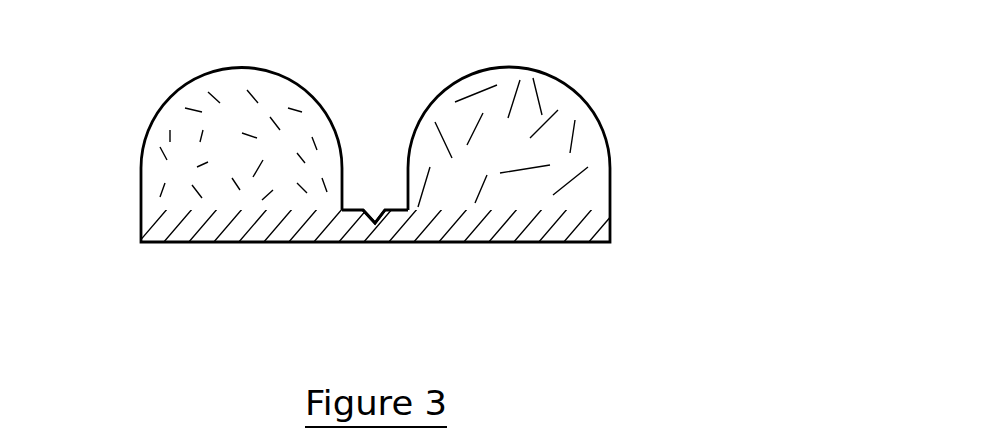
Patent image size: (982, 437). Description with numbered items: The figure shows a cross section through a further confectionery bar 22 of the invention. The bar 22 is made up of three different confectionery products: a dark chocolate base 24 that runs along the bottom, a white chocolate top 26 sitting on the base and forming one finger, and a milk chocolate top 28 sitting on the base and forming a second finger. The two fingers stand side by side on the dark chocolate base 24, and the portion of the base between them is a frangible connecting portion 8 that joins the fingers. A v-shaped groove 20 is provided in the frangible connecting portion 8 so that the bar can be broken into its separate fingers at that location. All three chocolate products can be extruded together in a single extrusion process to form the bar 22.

The frangible connecting portion 8 is at (400, 242).
The v-shaped groove 20 is at (378, 207).
The bar 22 is at (568, 57).
The dark chocolate base 24 is at (560, 223).
The white chocolate top 26 is at (141, 180).
The milk chocolate top 28 is at (590, 180).